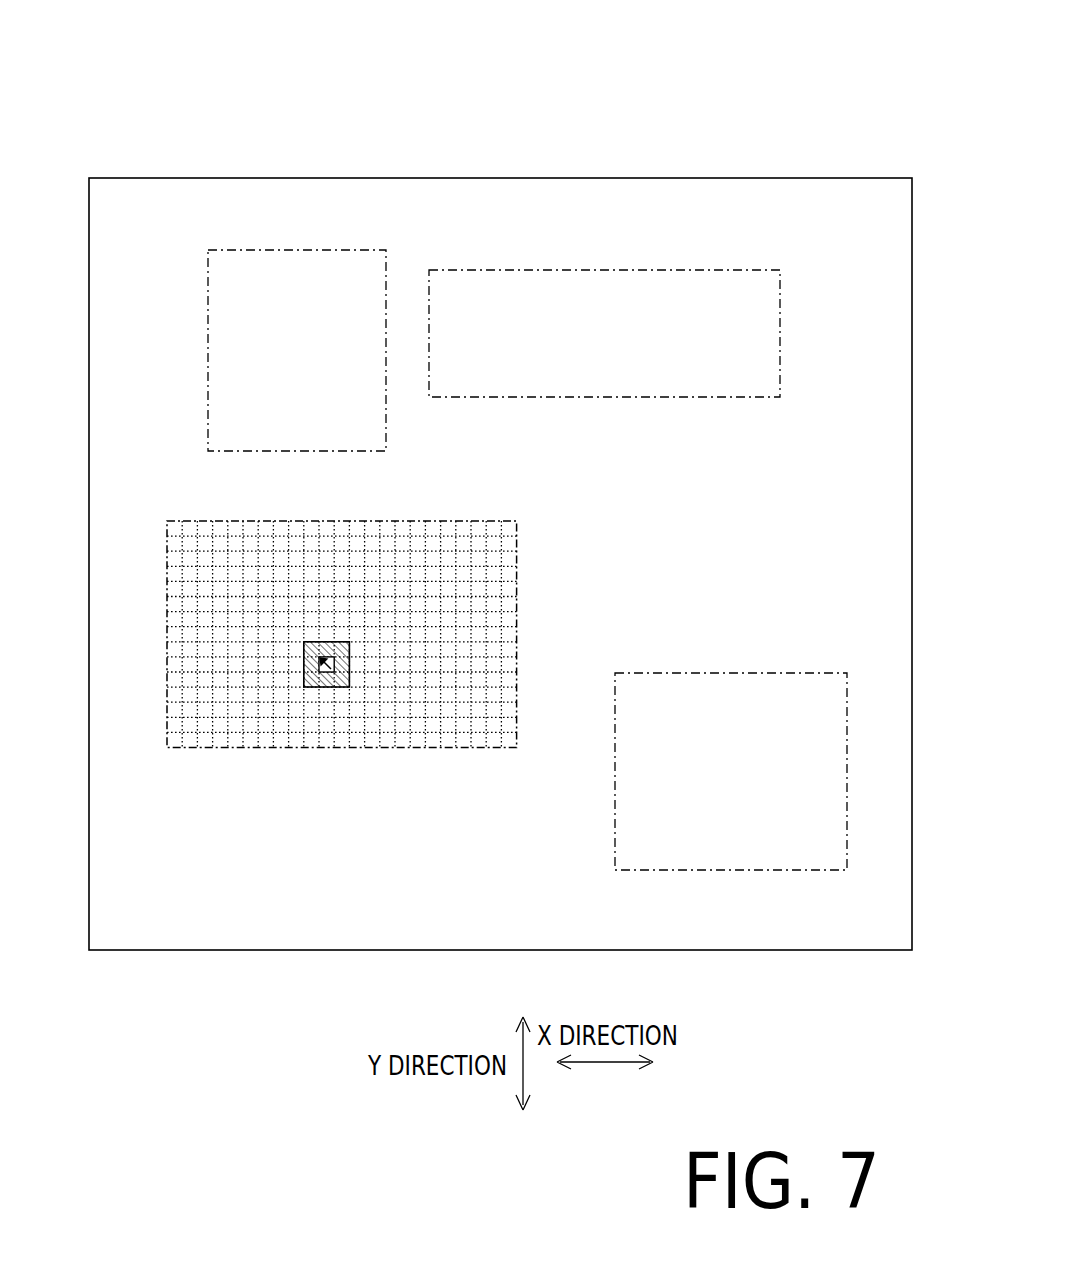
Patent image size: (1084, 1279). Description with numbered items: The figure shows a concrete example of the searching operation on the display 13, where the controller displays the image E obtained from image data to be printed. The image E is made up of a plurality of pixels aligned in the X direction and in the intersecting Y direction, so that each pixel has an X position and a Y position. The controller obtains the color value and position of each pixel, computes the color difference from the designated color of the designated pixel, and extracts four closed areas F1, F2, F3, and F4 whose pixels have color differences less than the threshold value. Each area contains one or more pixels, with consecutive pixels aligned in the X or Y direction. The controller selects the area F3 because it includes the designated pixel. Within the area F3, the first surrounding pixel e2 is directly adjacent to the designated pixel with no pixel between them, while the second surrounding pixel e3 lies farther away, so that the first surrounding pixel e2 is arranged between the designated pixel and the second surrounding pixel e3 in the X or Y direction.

The display 13 is at (500, 481).
The image E is at (522, 157).
The area F1 is at (332, 250).
The area F2 is at (750, 270).
The area F3 is at (195, 521).
The area F4 is at (758, 673).
The second surrounding pixel e3 is at (248, 599).
The first surrounding pixel e2 is at (344, 748).